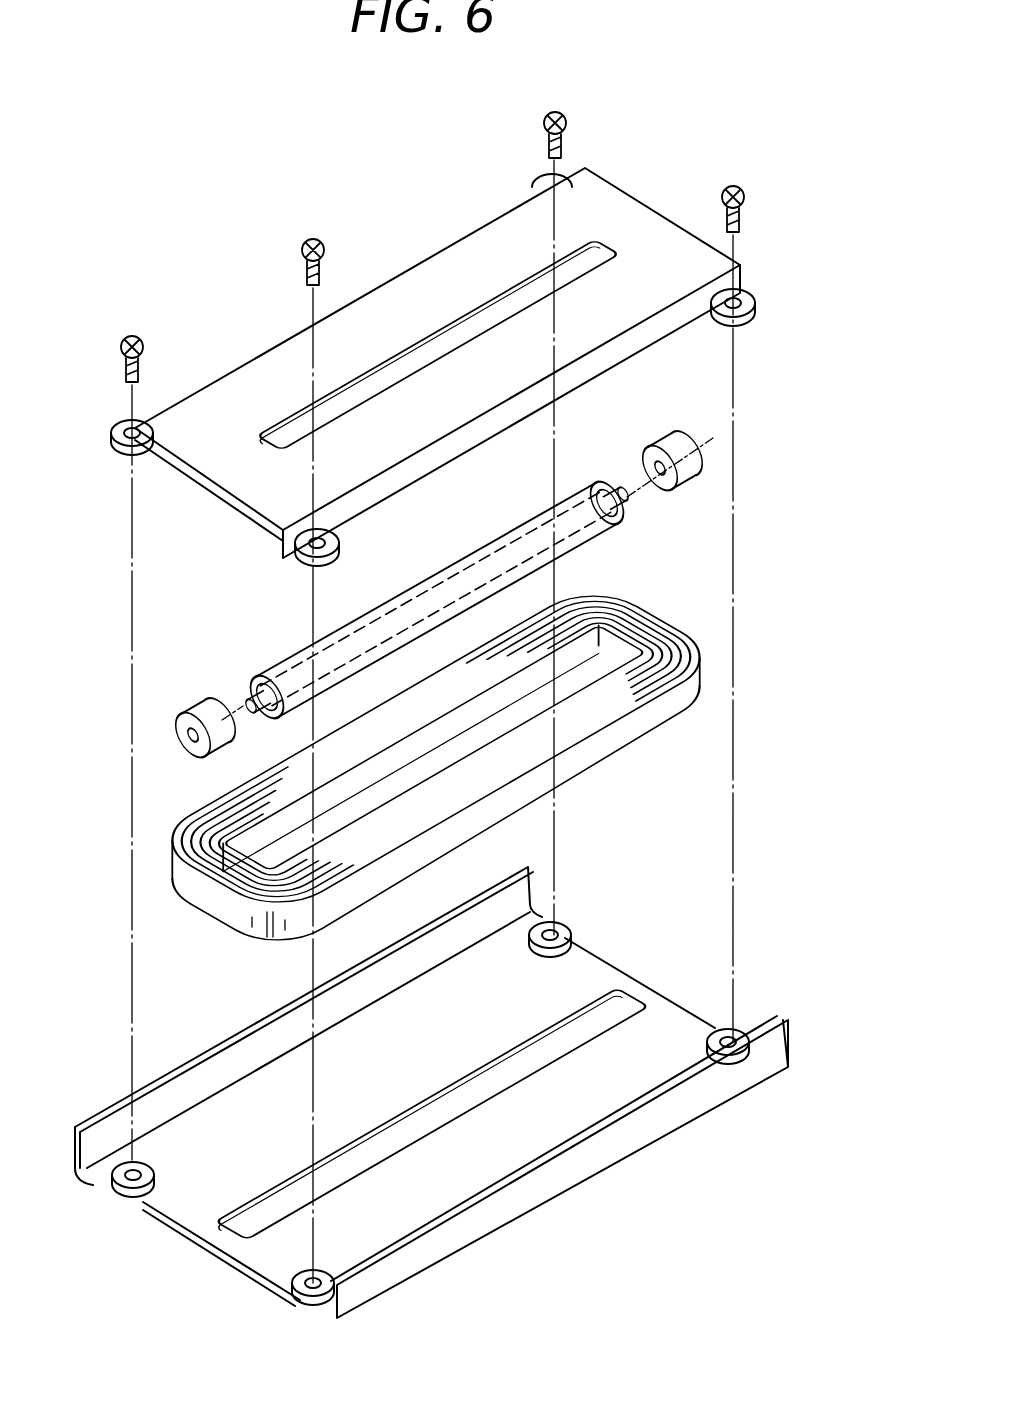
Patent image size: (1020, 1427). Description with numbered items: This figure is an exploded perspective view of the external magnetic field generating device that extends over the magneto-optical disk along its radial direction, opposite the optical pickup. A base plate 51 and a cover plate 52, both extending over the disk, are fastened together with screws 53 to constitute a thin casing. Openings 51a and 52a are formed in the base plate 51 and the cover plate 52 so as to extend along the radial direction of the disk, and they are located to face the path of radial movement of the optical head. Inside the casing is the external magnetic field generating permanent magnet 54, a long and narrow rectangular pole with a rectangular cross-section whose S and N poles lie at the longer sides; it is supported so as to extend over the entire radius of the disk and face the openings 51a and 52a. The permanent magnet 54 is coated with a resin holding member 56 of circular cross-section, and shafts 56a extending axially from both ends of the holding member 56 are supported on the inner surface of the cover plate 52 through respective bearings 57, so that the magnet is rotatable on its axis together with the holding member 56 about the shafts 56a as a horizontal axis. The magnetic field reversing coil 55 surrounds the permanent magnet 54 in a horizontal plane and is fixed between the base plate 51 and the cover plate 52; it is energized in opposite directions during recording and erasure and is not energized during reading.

The base plate 51 is at (431, 1105).
The opening 51a is at (245, 1223).
The cover plate 52 is at (433, 329).
The opening 52a is at (510, 303).
The screws 53 is at (307, 262).
The external magnetic field generating permanent magnet 54 is at (600, 523).
The magnetic field reversing coil 55 is at (632, 723).
The holding member 56 is at (597, 480).
The shafts 56a is at (252, 684).
The bearings 57 is at (190, 735).